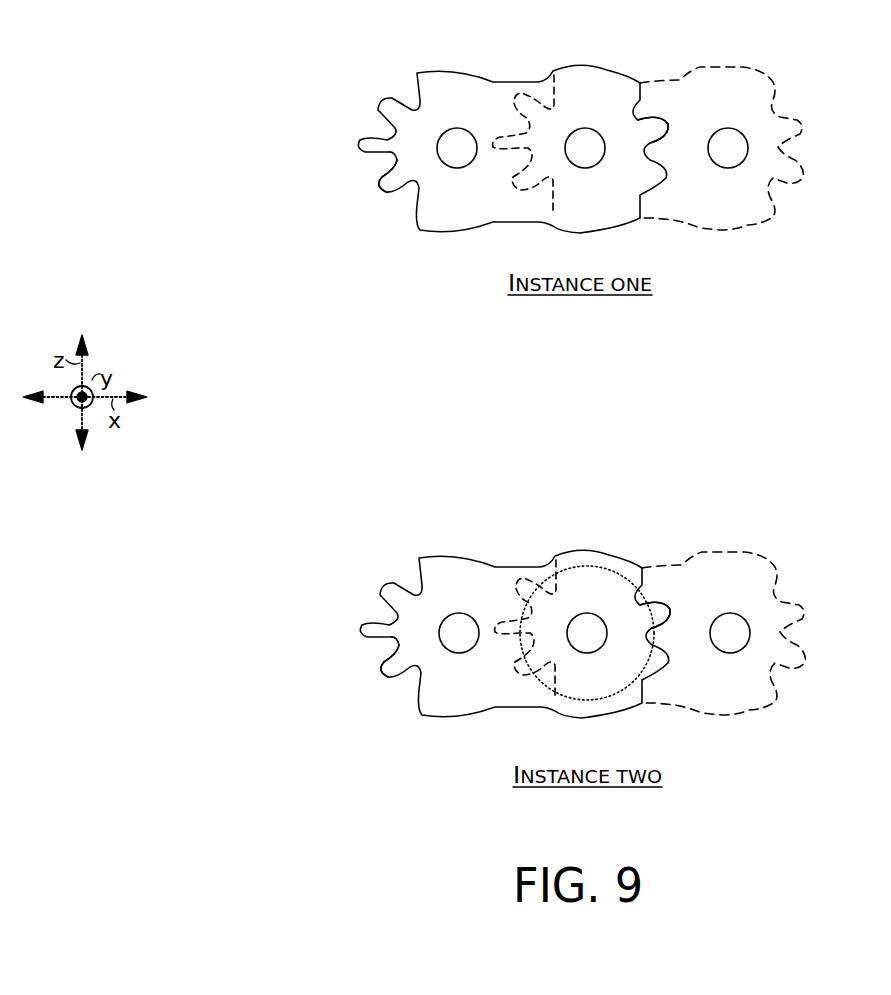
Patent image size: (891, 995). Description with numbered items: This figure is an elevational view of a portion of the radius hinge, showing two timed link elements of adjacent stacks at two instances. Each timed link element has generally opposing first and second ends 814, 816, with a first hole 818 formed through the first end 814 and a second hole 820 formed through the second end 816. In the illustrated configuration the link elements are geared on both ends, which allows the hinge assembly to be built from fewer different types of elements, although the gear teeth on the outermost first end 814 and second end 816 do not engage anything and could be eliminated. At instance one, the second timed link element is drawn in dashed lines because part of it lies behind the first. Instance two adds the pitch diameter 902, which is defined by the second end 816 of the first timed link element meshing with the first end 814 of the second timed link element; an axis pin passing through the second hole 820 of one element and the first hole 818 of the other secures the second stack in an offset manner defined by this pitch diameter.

The first end 814 is at (380, 192).
The second end 816 is at (667, 121).
The first hole 818 is at (466, 167).
The second hole 820 is at (720, 164).
The pitch diameter 902 is at (583, 567).